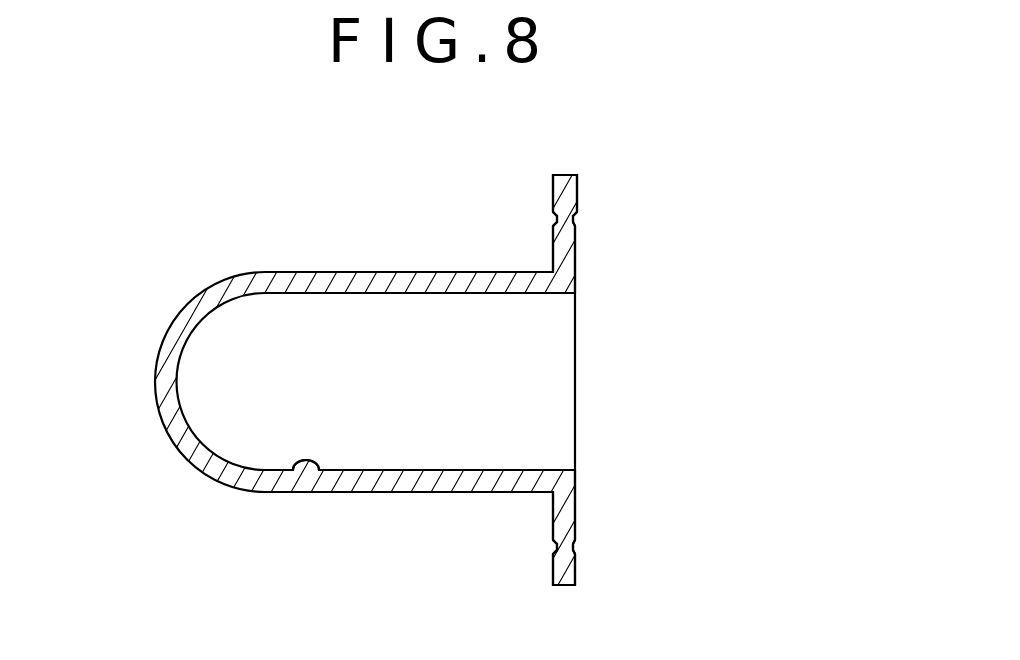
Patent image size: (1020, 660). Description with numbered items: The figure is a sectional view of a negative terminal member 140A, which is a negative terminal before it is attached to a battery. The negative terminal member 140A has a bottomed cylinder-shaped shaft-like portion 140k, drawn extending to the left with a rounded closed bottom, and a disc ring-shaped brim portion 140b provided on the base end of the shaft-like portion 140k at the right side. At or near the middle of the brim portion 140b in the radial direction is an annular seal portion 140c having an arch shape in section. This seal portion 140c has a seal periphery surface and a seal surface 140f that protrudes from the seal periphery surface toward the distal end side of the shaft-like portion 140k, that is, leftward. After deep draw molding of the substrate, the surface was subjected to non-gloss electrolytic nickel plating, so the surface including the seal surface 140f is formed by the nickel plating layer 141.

The negative terminal member 140A is at (365, 173).
The brim portion 140b is at (577, 248).
The seal portion 140c is at (578, 218).
The seal surface 140f is at (553, 217).
The shaft-like portion 140k is at (380, 480).
The nickel plating layer 141 is at (292, 462).